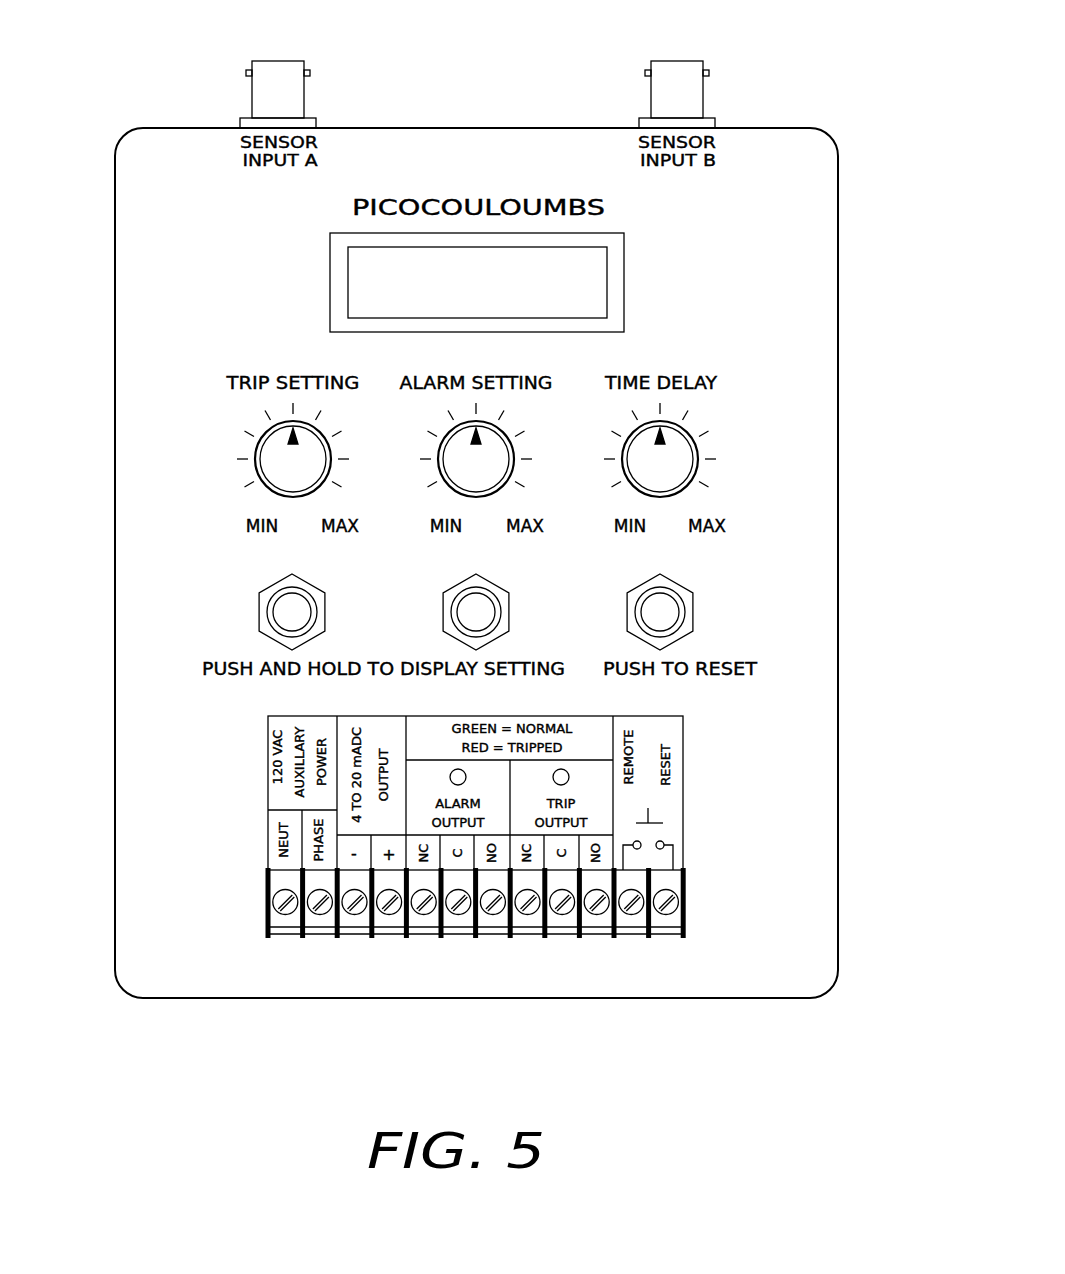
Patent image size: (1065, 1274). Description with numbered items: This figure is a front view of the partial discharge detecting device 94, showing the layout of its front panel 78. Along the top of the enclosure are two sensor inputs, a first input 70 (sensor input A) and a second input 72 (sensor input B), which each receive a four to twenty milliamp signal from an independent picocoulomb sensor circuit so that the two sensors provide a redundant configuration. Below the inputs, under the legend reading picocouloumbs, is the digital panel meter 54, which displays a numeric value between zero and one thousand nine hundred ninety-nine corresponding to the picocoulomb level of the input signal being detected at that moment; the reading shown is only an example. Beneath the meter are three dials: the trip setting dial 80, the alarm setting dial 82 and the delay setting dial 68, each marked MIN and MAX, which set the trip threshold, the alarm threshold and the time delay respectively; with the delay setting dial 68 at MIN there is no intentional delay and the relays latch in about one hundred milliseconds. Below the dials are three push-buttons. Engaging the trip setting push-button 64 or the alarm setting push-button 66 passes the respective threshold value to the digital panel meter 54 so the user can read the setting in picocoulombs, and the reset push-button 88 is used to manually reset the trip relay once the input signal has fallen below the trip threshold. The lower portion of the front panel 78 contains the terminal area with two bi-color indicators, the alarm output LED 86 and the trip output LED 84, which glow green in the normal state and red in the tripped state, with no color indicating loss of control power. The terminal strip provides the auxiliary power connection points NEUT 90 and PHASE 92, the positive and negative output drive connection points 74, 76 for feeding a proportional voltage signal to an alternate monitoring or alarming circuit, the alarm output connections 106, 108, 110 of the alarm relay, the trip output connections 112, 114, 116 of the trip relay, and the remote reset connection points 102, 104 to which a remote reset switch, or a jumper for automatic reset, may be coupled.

The partial discharge detecting device 94 is at (122, 136).
The first input 70 is at (295, 93).
The second input 72 is at (693, 90).
The digital panel meter 54 is at (616, 266).
The trip setting dial 80 is at (268, 458).
The alarm setting dial 82 is at (500, 455).
The delay setting dial 68 is at (697, 455).
The front panel 78 is at (828, 652).
The trip setting push-button 64 is at (272, 612).
The alarm setting push-button 66 is at (500, 612).
The reset push-button 88 is at (690, 605).
The alarm output LED 86 is at (452, 772).
The trip output LED 84 is at (568, 772).
The NEUT connection point 90 is at (285, 918).
The PHASE connection point 92 is at (320, 918).
The negative output drive connection point 76 is at (354, 918).
The positive output drive connection point 74 is at (389, 918).
The alarm output connection 106 is at (423, 918).
The alarm output connection 108 is at (457, 918).
The alarm output connection 110 is at (492, 918).
The trip output connection 112 is at (527, 918).
The trip output connection 114 is at (561, 918).
The trip output connection 116 is at (596, 918).
The remote reset connection point 102 is at (631, 918).
The remote reset connection point 104 is at (665, 918).